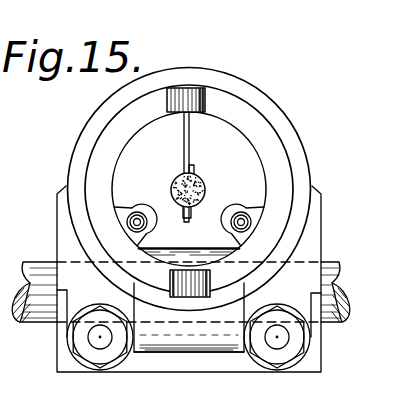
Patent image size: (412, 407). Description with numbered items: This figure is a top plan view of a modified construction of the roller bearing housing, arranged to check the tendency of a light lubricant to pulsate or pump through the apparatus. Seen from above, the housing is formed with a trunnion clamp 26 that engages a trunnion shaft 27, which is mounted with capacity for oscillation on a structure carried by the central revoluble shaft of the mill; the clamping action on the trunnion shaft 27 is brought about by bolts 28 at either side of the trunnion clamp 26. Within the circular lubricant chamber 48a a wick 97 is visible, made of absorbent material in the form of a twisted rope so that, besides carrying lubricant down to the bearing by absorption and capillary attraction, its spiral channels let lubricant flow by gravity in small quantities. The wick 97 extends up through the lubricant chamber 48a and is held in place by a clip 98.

The lubricant chamber 48a is at (219, 146).
The clip 98 is at (184, 157).
The wick 97 is at (205, 189).
The trunnion shaft 27 is at (43, 328).
The trunnion clamp 26 is at (186, 342).
The bolts 28 is at (277, 337).